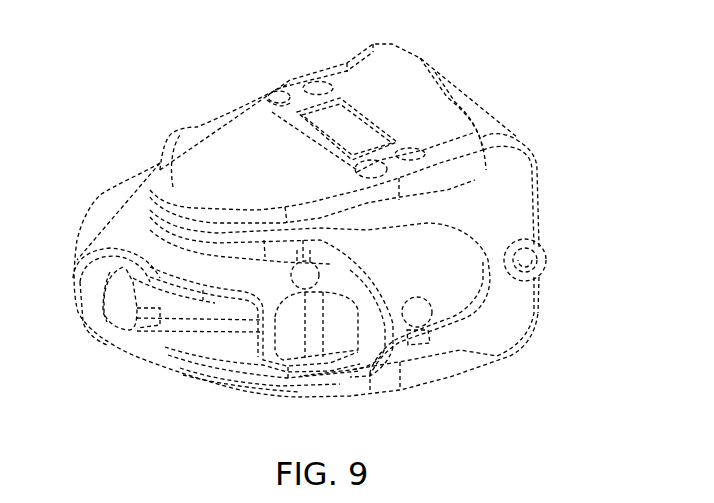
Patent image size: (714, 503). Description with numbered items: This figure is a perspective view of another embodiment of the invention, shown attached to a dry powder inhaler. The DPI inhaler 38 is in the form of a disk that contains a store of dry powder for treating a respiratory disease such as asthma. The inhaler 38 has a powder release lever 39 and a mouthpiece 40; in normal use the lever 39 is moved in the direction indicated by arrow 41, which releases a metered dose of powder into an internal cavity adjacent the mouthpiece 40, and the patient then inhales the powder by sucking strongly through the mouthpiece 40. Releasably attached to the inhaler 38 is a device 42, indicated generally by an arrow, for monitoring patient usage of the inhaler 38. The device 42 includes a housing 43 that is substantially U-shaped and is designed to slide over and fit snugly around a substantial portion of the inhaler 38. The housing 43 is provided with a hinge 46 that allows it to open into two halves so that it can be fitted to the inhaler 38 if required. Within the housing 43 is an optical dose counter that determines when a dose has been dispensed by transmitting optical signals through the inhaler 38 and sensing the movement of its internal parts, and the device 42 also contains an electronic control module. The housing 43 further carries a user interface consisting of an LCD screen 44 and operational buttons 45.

The DPI inhaler 38 is at (203, 292).
The powder release lever 39 is at (110, 315).
The mouthpiece 40 is at (98, 223).
The arrow 41 is at (203, 268).
The device 42 is at (188, 87).
The housing 43 is at (207, 140).
The LCD screen 44 is at (347, 125).
The operational buttons 45 is at (273, 100).
The hinge 46 is at (527, 257).